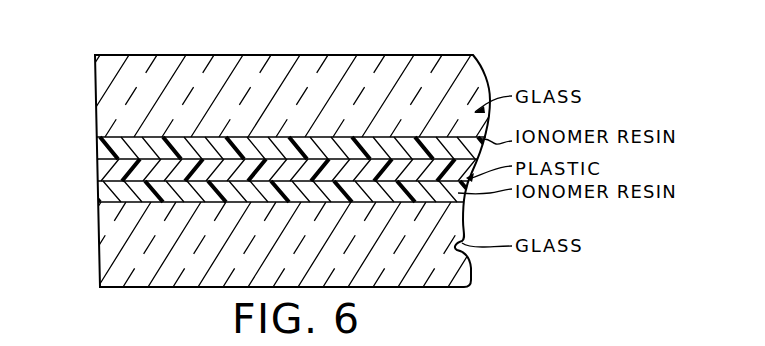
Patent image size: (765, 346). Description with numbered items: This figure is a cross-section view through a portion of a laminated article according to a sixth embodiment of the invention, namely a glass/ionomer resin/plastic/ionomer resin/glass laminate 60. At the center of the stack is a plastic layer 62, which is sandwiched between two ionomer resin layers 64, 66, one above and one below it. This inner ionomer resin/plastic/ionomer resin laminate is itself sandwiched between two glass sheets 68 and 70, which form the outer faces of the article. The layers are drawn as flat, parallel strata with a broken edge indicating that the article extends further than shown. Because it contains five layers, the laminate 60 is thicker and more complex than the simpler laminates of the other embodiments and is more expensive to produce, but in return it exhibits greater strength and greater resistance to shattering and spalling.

The laminate 60 is at (133, 33).
The plastic layer 62 is at (98, 171).
The ionomer resin layer 64 is at (97, 144).
The ionomer resin layer 66 is at (99, 201).
The glass sheet 68 is at (96, 104).
The glass sheet 70 is at (100, 247).